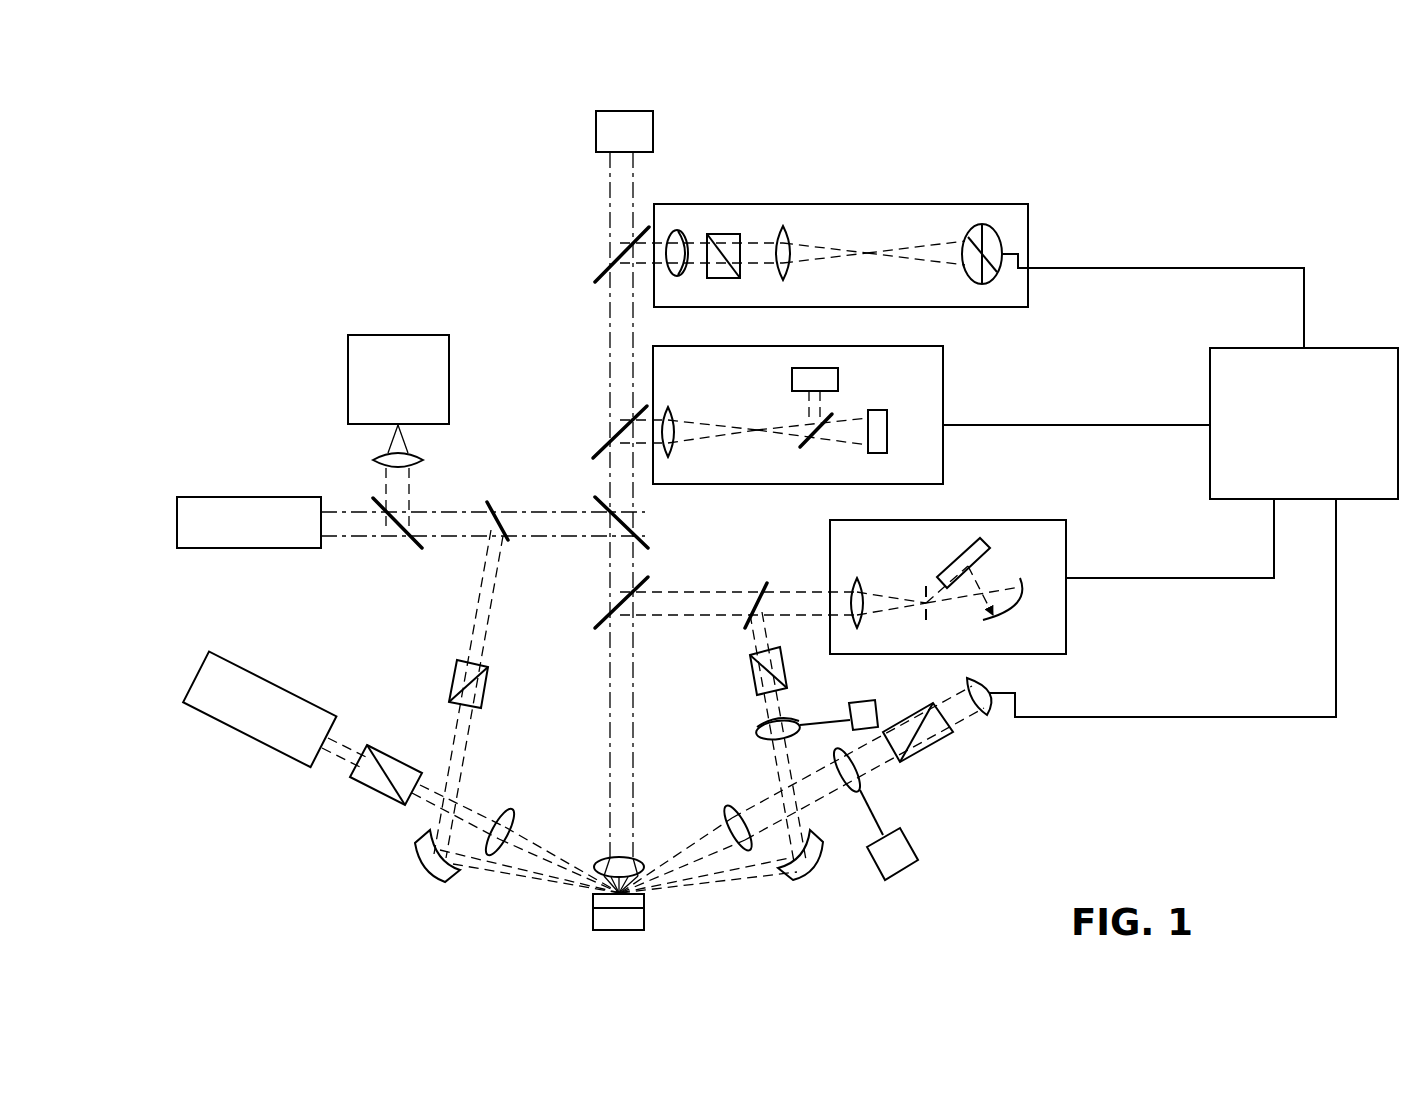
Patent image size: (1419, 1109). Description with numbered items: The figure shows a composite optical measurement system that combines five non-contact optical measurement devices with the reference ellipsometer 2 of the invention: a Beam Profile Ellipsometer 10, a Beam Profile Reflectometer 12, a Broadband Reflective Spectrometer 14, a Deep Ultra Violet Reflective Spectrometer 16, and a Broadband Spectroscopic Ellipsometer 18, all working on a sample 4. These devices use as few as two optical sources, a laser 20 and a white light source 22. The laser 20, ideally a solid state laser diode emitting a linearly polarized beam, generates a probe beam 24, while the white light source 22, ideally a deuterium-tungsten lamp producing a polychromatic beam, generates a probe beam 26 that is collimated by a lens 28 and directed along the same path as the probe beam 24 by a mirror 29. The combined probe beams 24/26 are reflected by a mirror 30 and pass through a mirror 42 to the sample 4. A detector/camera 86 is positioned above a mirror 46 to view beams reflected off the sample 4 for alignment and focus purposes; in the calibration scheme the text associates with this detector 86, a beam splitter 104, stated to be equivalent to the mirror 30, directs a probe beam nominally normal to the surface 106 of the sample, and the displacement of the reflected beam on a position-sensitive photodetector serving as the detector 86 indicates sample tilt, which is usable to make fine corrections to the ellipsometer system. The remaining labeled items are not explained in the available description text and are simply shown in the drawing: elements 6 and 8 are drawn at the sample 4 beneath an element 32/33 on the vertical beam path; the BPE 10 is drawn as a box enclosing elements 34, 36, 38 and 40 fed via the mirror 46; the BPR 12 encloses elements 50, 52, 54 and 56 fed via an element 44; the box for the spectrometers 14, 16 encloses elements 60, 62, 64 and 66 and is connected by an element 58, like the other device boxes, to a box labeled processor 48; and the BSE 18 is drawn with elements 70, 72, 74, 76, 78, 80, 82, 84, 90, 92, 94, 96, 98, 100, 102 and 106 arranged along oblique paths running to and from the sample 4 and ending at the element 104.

The reference ellipsometer 2 is at (335, 770).
The sample 4 is at (586, 917).
The substrate 6 is at (644, 922).
The thin film 8 is at (644, 902).
The Beam Profile Ellipsometer 10 is at (836, 221).
The Beam Profile Reflectometer 12 is at (815, 415).
The Broadband Reflective Spectrometer 14 is at (843, 567).
The Deep Ultra Violet Reflective Spectrometer 16 is at (843, 567).
The Broadband Spectroscopic Ellipsometer 18 is at (518, 885).
The laser 20 is at (215, 548).
The white light source 22 is at (398, 335).
The probe beam 24 is at (380, 538).
The probe beam 26 is at (412, 480).
The lens 28 is at (420, 455).
The mirror 29 is at (410, 545).
The mirror 30 is at (637, 537).
The objective lens 32 is at (655, 840).
The objective lens 33 is at (637, 858).
The lens 34 is at (673, 231).
The beam splitter cube 36 is at (724, 234).
The lens 38 is at (790, 230).
The detector 40 is at (990, 226).
The mirror 42 is at (605, 617).
The beam splitter 44 is at (605, 446).
The mirror 46 is at (600, 268).
The processor 48 is at (1304, 423).
The lens 50 is at (676, 420).
The mirror 52 is at (803, 447).
The detector 54 is at (887, 430).
The detector 56 is at (838, 380).
The output signal line 58 is at (1066, 537).
The lens 60 is at (865, 582).
The slit 62 is at (927, 620).
The detector array 64 is at (1008, 612).
The grating 66 is at (990, 548).
The polarizer cube 70 is at (488, 685).
The curved mirror 72 is at (430, 866).
The curved mirror 74 is at (800, 872).
The lens 76 is at (758, 736).
The detector 78 is at (858, 703).
The beam splitter cube 80 is at (787, 665).
The beam splitter 82 is at (495, 510).
The beam splitter 84 is at (760, 583).
The detector/camera 86 is at (653, 118).
The light source 90 is at (200, 716).
The polarizer cube 92 is at (390, 800).
The lens 94 is at (510, 815).
The lens 96 is at (735, 810).
The beam splitter 98 is at (865, 778).
The detector 100 is at (908, 842).
The analyzer cube 102 is at (930, 750).
The beam splitter 104 is at (985, 720).
The surface 106 is at (343, 740).